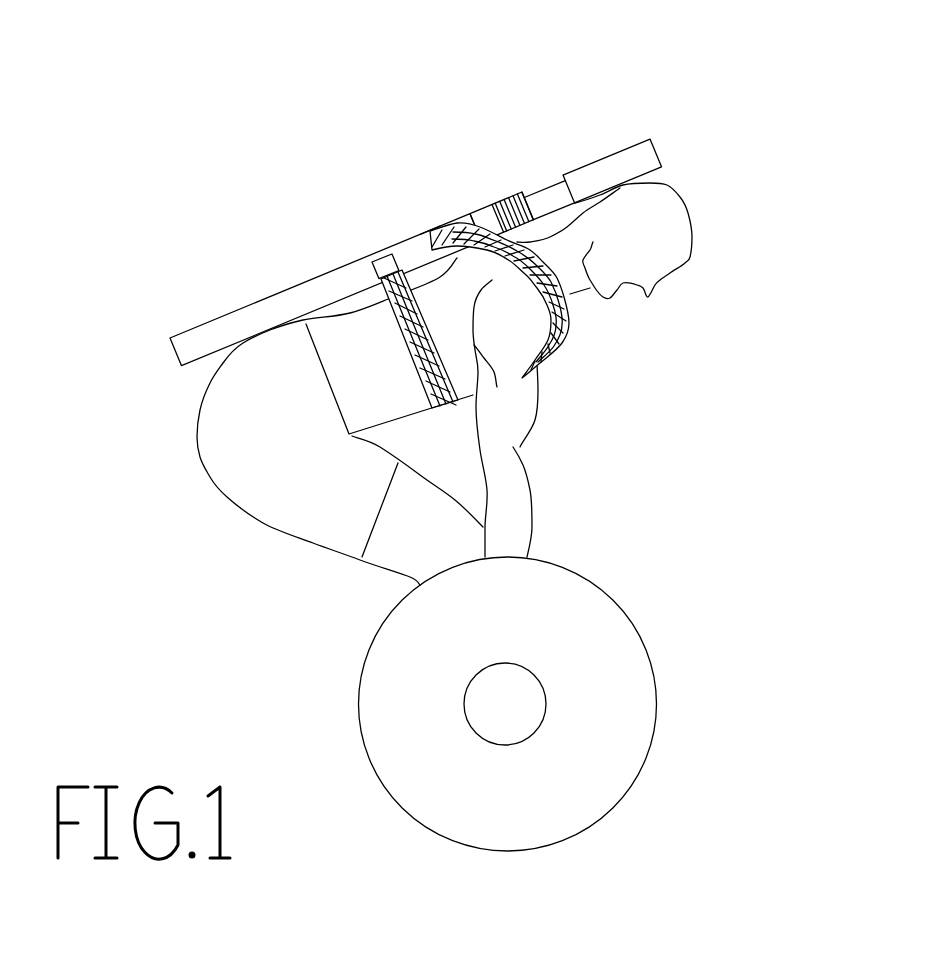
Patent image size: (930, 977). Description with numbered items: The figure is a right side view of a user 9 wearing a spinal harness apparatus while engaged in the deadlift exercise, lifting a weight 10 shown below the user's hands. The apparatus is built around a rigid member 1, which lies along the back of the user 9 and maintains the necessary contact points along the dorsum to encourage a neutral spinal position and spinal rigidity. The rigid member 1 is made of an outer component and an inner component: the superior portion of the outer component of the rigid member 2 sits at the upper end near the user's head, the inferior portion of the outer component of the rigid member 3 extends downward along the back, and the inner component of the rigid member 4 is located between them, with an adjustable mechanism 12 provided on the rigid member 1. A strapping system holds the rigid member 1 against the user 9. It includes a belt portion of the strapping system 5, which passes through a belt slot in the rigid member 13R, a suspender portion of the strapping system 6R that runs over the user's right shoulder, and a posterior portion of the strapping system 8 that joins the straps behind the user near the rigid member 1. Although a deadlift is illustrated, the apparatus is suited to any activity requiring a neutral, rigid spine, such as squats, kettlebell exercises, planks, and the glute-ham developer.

The rigid member 1 is at (416, 195).
The superior portion of the outer component of the rigid member 2 is at (617, 168).
The inferior portion of the outer component of the rigid member 3 is at (267, 323).
The inner component of the rigid member 4 is at (547, 193).
The belt portion of the strapping system 5 is at (420, 382).
The suspender portion of the strapping system 6R is at (570, 326).
The posterior portion of the strapping system 8 is at (435, 228).
The user 9 is at (293, 483).
The weight 10 is at (617, 706).
The adjustable mechanism 12 is at (503, 193).
The belt slot in the rigid member 13R is at (382, 252).